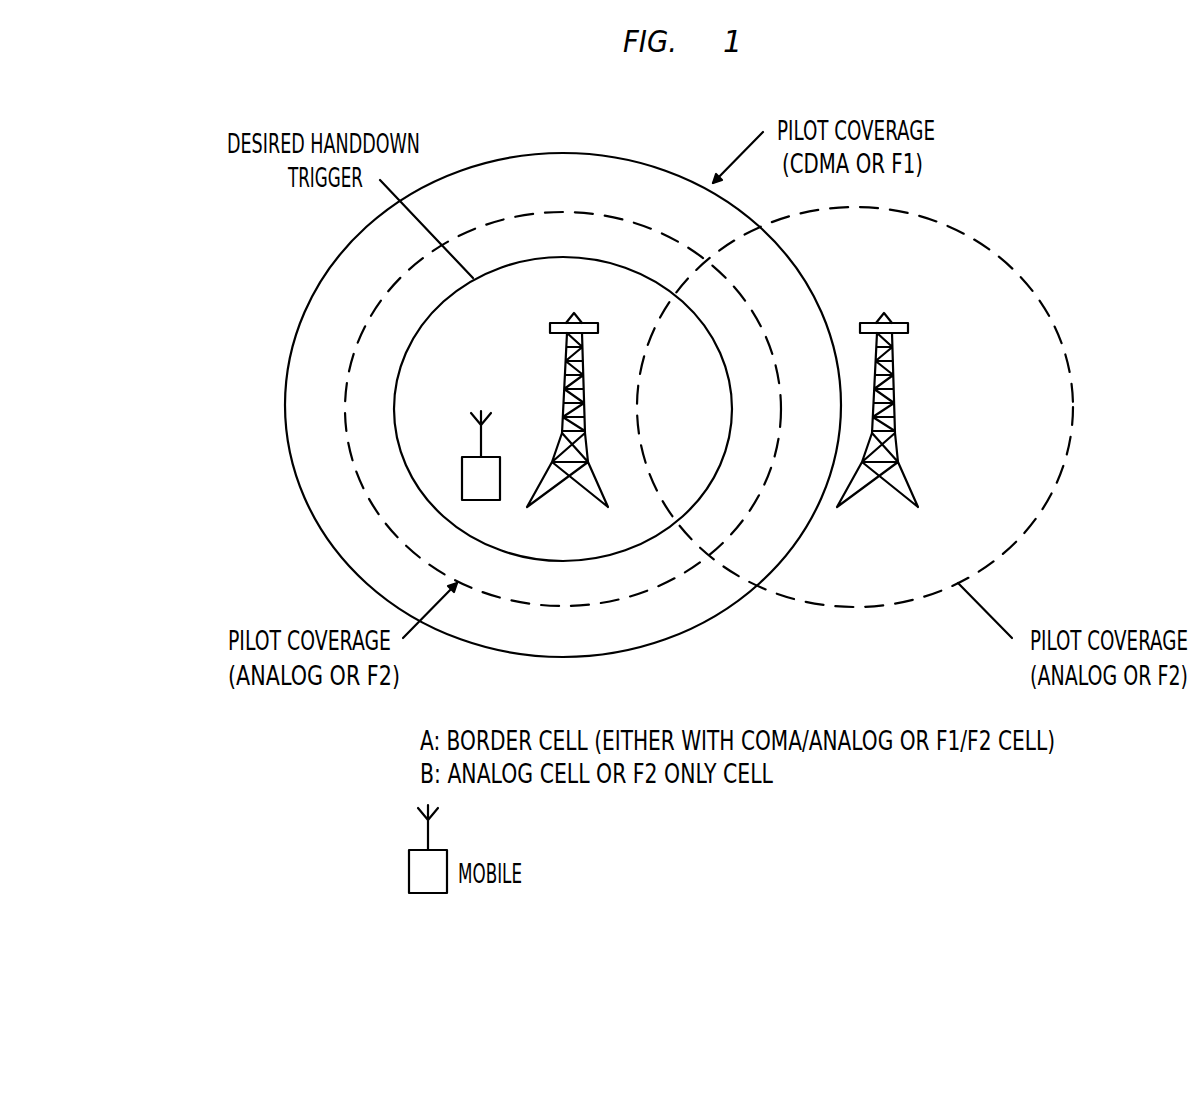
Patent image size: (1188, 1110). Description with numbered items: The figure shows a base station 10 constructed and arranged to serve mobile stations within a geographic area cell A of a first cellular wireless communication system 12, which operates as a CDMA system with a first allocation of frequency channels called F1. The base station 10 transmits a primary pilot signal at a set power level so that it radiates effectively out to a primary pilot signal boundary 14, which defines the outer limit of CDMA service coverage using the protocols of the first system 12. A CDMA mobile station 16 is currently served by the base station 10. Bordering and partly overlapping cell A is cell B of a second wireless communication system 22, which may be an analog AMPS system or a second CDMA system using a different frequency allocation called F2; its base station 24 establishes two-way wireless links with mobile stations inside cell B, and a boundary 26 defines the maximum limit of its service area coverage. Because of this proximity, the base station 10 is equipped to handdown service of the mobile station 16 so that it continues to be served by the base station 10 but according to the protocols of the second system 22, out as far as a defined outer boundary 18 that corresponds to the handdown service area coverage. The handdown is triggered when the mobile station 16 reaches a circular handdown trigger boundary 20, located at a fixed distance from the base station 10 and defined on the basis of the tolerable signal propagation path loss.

The base station 10 is at (563, 402).
The first cellular wireless communication system 12 is at (218, 540).
The primary pilot signal boundary 14 is at (303, 323).
The mobile station 16 is at (465, 455).
The outer boundary 18 is at (345, 423).
The handdown trigger boundary 20 is at (433, 313).
The second wireless communication system 22 is at (1112, 235).
The base station 24 is at (897, 405).
The boundary 26 is at (1067, 373).